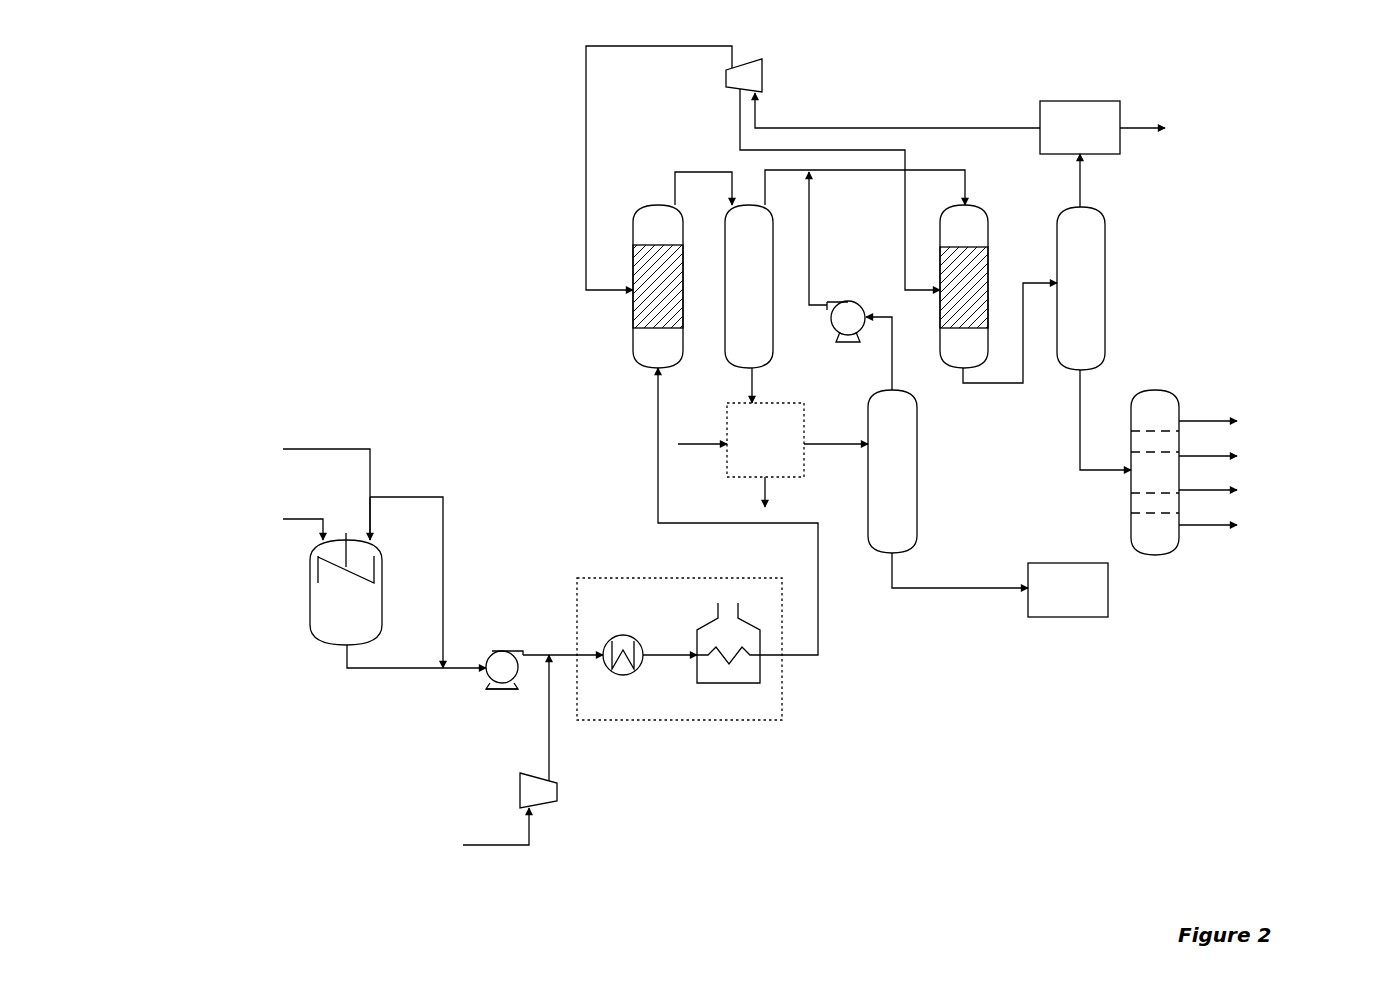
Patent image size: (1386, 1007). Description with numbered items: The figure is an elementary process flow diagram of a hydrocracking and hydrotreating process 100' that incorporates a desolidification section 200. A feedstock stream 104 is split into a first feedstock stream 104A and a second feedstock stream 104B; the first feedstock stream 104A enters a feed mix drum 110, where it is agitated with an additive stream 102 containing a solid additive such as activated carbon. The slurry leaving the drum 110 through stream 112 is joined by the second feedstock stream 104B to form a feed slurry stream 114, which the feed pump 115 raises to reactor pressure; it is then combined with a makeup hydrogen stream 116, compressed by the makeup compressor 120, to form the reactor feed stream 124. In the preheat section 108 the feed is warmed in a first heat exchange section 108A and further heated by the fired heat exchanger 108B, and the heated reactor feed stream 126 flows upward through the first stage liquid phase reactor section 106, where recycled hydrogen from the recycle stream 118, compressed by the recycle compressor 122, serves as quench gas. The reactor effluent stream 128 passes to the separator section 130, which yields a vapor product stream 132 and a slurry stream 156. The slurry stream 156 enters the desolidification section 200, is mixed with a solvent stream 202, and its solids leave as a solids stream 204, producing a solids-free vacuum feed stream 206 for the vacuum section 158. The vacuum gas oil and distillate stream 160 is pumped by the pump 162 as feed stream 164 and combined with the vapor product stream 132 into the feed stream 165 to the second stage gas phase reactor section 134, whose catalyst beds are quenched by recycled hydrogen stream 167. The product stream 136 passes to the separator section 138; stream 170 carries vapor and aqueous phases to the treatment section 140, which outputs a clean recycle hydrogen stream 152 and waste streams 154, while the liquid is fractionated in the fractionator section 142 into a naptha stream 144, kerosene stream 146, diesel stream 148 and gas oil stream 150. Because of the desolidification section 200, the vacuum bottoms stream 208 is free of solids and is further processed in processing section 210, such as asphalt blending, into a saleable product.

The process 100' is at (297, 138).
The additive stream 102 is at (307, 517).
The feedstock stream 104 is at (315, 447).
The first feedstock stream 104A is at (370, 518).
The second feedstock stream 104B is at (475, 527).
The first stage liquid phase reactor section 106 is at (658, 286).
The preheat section 108 is at (672, 578).
The first heat exchange section 108A is at (622, 675).
The fired heat exchanger 108B is at (713, 620).
The feed mix drum 110 is at (346, 589).
The mixed feed stream 112 is at (363, 672).
The feed slurry stream 114 is at (457, 667).
The feed pump 115 is at (480, 680).
The makeup hydrogen stream 116 is at (549, 745).
The recycle stream 118 is at (586, 188).
The makeup compressor 120 is at (553, 805).
The recycle compressor 122 is at (750, 62).
The reactor feed stream 124 is at (562, 652).
The heated reactor feed stream 126 is at (797, 658).
The reactor effluent stream 128 is at (705, 172).
The separator section 130 is at (749, 286).
The vapor product stream 132 is at (766, 180).
The second stage gas phase reactor section 134 is at (964, 286).
The product stream 136 is at (970, 385).
The separator section 138 is at (1081, 288).
The treatment section 140 is at (1080, 462).
The fractionator section 142 is at (1155, 472).
The naptha stream 144 is at (1252, 415).
The kerosene stream 146 is at (1265, 451).
The diesel stream 148 is at (1246, 486).
The gas oil stream 150 is at (1252, 520).
The clean recycle hydrogen stream 152 is at (905, 128).
The waste streams 154 is at (1135, 128).
The slurry stream 156 is at (752, 383).
The vacuum section 158 is at (892, 471).
The vacuum gas oil and distillate stream 160 is at (892, 385).
The pump 162 is at (848, 302).
The feed stream 164 is at (809, 240).
The feed stream 165 is at (950, 169).
The stream 167 is at (740, 133).
The stream 170 is at (1080, 192).
The desolidification section 200 is at (797, 403).
The solvent stream 202 is at (712, 445).
The solids stream 204 is at (765, 483).
The vacuum feed stream 206 is at (815, 444).
The bottoms stream 208 is at (940, 592).
The processing section 210 is at (1068, 590).